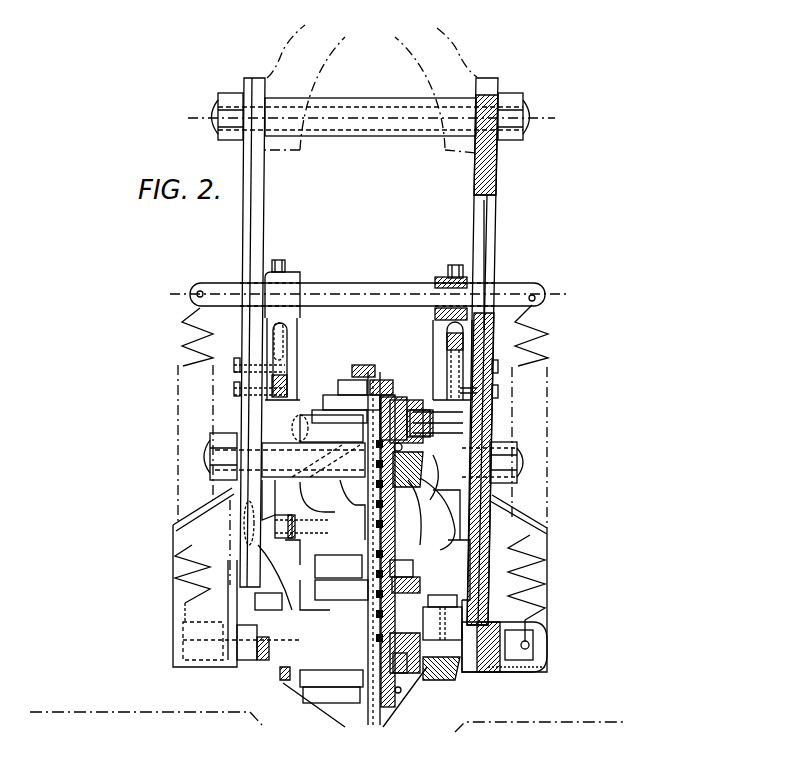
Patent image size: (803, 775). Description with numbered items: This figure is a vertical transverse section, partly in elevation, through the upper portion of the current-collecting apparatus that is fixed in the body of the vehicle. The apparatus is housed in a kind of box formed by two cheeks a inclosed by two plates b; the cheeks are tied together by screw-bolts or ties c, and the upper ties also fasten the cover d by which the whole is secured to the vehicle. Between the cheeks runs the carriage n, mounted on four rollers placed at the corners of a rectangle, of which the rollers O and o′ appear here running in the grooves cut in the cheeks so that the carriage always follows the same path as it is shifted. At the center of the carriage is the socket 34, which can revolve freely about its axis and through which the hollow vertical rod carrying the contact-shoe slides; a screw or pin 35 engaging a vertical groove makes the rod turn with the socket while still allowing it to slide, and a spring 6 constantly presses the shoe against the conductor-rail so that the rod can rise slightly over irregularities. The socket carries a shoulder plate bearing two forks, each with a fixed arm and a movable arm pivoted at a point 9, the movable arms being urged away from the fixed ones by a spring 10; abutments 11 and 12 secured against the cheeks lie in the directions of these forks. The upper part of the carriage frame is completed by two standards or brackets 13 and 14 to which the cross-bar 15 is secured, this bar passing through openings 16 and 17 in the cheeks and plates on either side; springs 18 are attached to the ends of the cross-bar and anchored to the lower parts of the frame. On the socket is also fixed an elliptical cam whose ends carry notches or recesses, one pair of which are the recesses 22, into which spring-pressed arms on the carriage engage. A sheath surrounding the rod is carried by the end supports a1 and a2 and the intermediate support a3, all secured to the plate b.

The cheek a is at (266, 160).
The plate b is at (250, 153).
The screw-bolt or tie c is at (397, 128).
The cover d is at (447, 42).
The end support a1 is at (490, 402).
The end support a2 is at (240, 402).
The intermediate support a3 is at (490, 345).
The roller O is at (253, 505).
The roller o′ is at (495, 498).
The carriage n is at (422, 438).
The spring 6 is at (424, 501).
The pivot point 9 is at (427, 644).
The spring 10 is at (215, 636).
The abutment 11 is at (282, 368).
The abutment 12 is at (447, 368).
The standard or bracket 13 is at (300, 335).
The standard or bracket 14 is at (433, 342).
The cross-bar 15 is at (390, 291).
The opening 16 is at (485, 273).
The opening 17 is at (247, 271).
The spring 18 is at (184, 326).
The notch or recess 22 is at (527, 614).
The socket 34 is at (370, 564).
The screw or pin 35 is at (425, 668).